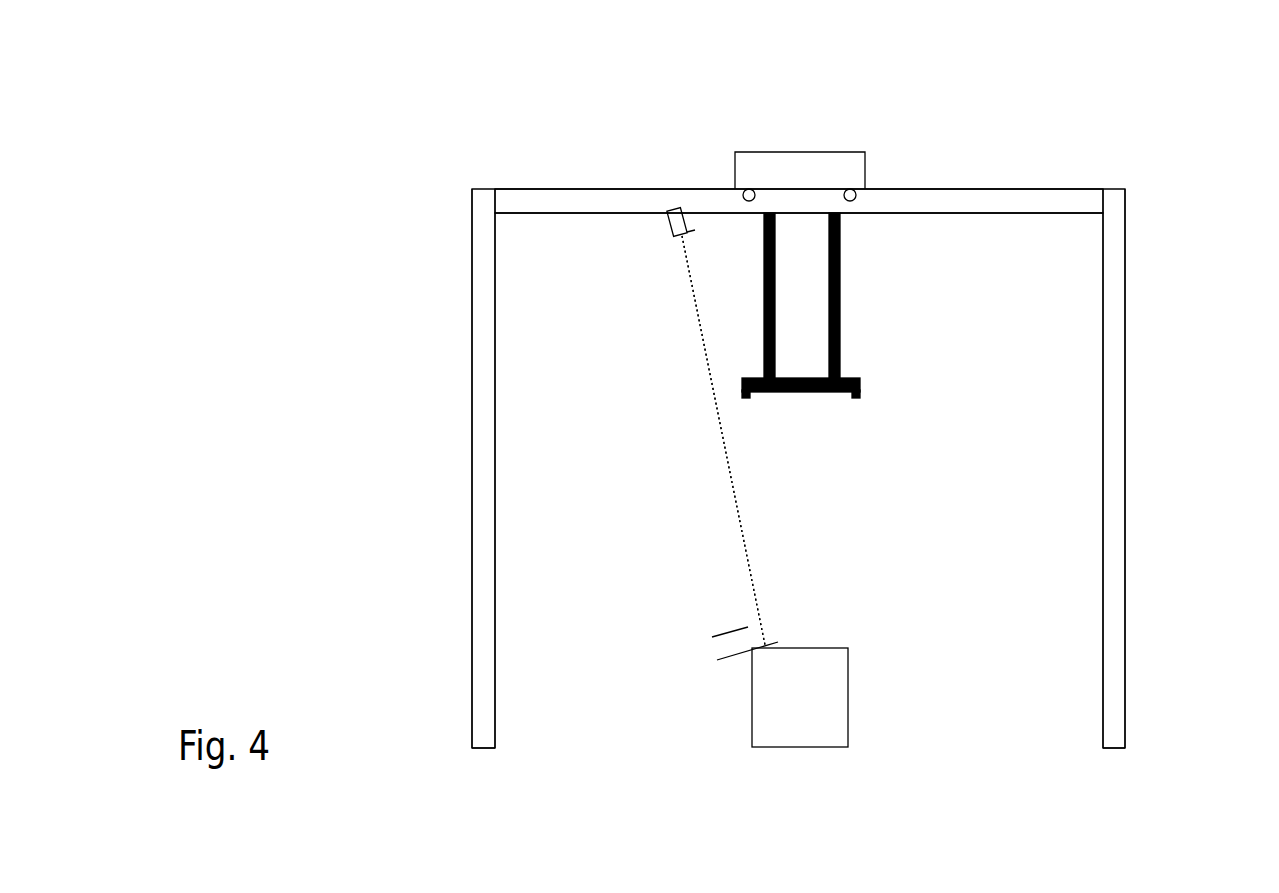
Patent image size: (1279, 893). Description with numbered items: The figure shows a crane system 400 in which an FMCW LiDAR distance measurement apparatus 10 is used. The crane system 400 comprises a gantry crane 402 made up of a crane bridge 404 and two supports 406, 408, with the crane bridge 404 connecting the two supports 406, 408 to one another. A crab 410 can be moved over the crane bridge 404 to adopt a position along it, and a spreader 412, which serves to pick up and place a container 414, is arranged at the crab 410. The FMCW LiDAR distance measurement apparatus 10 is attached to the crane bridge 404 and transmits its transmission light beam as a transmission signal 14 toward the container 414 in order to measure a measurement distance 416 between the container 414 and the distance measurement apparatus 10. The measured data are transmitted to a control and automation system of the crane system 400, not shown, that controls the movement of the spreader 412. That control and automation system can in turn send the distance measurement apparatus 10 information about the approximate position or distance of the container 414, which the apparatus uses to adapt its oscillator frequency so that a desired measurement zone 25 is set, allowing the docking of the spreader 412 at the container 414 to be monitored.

The crane system 400 is at (400, 168).
The gantry crane 402 is at (1113, 360).
The crane bridge 404 is at (963, 202).
The support 406 is at (1113, 528).
The support 408 is at (482, 447).
The crab 410 is at (807, 167).
The spreader 412 is at (855, 382).
The container 414 is at (832, 682).
The FMCW LiDAR distance measurement apparatus 10 is at (680, 207).
The transmission signal 14 is at (738, 512).
The measurement distance 416 is at (781, 440).
The measurement zone 25 is at (717, 648).